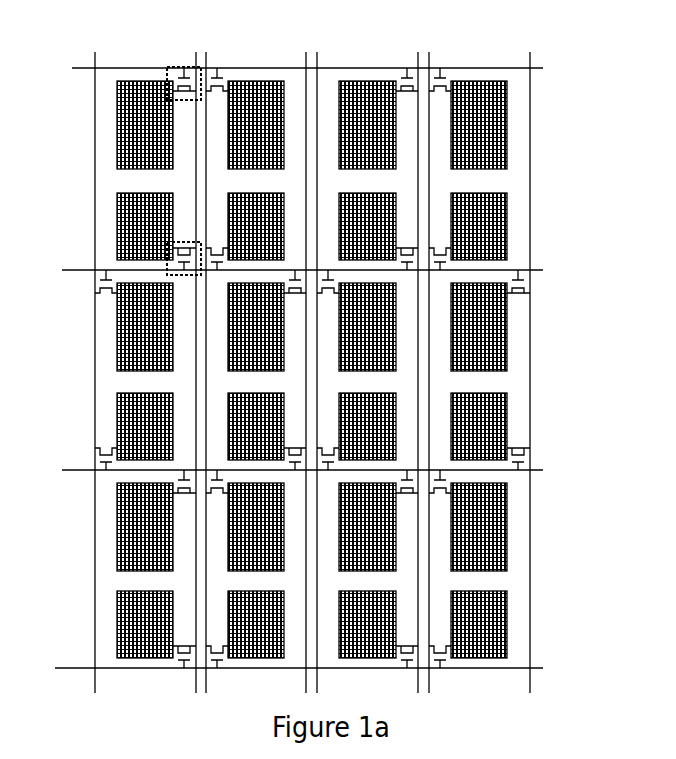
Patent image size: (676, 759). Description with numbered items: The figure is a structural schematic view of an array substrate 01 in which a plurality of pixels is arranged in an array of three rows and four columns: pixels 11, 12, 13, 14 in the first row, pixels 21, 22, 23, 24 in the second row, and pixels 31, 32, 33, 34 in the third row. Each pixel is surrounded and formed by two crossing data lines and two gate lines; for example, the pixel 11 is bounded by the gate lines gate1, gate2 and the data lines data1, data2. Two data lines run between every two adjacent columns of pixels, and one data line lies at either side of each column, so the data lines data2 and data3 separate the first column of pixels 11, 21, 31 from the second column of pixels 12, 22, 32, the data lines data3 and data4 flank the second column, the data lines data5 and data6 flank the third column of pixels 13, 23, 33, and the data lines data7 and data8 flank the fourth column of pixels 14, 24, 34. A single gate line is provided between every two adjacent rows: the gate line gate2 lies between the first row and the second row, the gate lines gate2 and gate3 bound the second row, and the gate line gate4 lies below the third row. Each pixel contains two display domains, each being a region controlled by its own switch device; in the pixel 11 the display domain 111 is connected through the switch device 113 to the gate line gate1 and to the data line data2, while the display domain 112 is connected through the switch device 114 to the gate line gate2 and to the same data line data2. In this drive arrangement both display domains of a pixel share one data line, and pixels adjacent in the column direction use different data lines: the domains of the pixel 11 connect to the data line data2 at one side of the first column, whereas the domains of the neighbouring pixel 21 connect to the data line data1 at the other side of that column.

The array substrate 01 is at (548, 118).
The pixel 11 is at (124, 171).
The pixel 12 is at (245, 169).
The pixel 13 is at (378, 169).
The pixel 14 is at (468, 169).
The pixel 21 is at (134, 370).
The pixel 22 is at (267, 370).
The pixel 23 is at (356, 370).
The pixel 24 is at (490, 370).
The pixel 31 is at (156, 569).
The pixel 32 is at (245, 569).
The pixel 33 is at (378, 569).
The pixel 34 is at (468, 569).
The display domain 111 is at (133, 132).
The display domain 112 is at (133, 209).
The switch device 113 is at (166, 99).
The switch device 114 is at (169, 248).
The gate line gate1 is at (285, 68).
The gate line gate2 is at (280, 270).
The gate line gate3 is at (280, 470).
The gate line gate4 is at (277, 668).
The data line data1 is at (96, 361).
The data line data2 is at (174, 361).
The data line data3 is at (227, 361).
The data line data4 is at (284, 361).
The data line data5 is at (338, 361).
The data line data6 is at (396, 361).
The data line data7 is at (451, 361).
The data line data8 is at (527, 361).